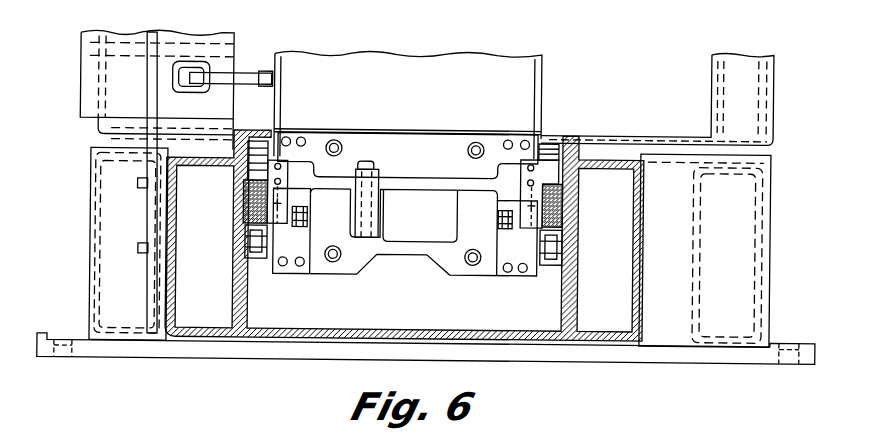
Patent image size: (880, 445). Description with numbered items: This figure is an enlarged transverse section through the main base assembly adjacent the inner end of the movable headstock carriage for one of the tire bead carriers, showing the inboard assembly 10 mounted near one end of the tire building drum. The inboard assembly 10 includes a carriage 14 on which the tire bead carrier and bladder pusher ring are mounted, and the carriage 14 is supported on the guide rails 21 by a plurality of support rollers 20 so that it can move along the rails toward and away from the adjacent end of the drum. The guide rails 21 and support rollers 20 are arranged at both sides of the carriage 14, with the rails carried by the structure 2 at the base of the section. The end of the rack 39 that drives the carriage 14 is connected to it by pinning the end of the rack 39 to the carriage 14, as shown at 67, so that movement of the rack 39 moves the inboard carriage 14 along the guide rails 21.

The base frame 2 is at (88, 254).
The inboard assembly 10 is at (550, 59).
The carriage 14 is at (527, 88).
The support rollers 20 is at (257, 244).
The guide rails 21 is at (246, 196).
The rack 39 is at (391, 240).
The pin connection 67 is at (363, 161).